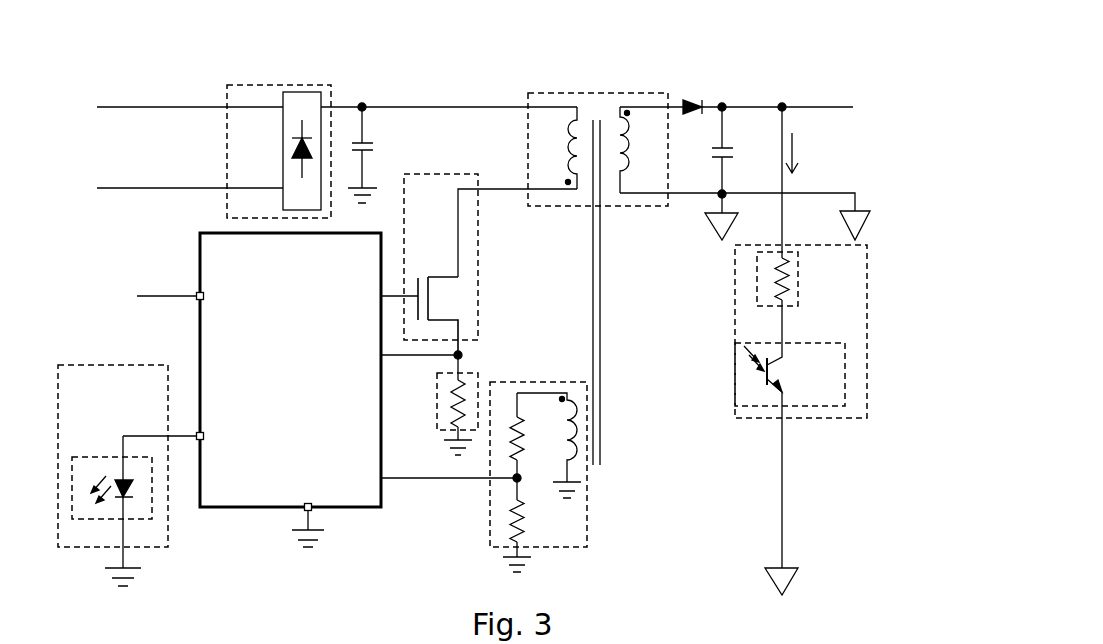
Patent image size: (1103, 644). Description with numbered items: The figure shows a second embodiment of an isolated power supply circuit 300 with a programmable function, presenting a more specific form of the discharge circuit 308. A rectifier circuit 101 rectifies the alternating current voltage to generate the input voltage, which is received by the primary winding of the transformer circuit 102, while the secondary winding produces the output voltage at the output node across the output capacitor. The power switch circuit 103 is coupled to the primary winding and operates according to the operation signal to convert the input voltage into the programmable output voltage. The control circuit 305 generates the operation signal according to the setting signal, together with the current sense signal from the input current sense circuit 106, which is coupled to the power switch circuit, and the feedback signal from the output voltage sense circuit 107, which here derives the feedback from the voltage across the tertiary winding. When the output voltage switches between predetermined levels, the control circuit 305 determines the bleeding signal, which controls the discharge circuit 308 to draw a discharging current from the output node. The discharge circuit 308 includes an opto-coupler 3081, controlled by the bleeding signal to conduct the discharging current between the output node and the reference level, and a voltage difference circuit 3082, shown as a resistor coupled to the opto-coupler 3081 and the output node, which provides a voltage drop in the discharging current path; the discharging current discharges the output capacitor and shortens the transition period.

The isolated power supply circuit 300 is at (887, 79).
The rectifier circuit 101 is at (259, 215).
The transformer circuit 102 is at (610, 93).
The power switch circuit 103 is at (436, 205).
The input current sense circuit 106 is at (437, 397).
The output voltage sense circuit 107 is at (490, 502).
The control circuit 305 is at (241, 496).
The discharge circuit 308 is at (857, 273).
The opto-coupler 3081 is at (847, 382).
The voltage difference circuit 3082 is at (800, 272).